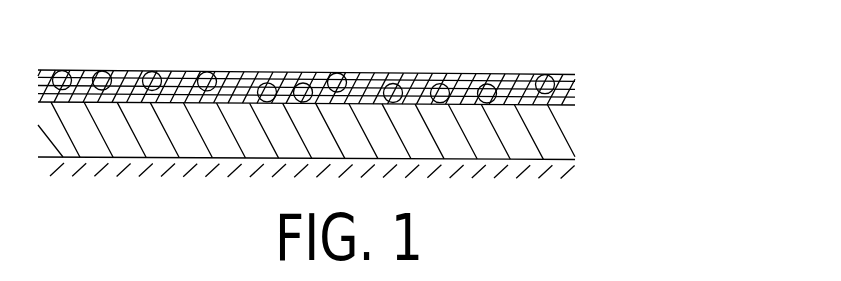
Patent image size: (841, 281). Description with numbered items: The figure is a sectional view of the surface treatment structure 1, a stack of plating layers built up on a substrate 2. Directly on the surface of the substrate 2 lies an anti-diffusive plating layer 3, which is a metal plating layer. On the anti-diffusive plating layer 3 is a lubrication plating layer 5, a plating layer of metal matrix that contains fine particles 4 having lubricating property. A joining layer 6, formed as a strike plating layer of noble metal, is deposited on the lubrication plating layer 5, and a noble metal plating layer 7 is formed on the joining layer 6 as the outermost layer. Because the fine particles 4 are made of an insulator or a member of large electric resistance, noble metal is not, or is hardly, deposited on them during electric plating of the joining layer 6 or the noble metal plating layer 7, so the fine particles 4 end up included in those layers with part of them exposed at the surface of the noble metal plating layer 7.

The surface treatment structure 1 is at (670, 150).
The substrate 2 is at (550, 174).
The anti-diffusive plating layer 3 is at (548, 142).
The fine particles 4 is at (208, 74).
The lubrication plating layer 5 is at (576, 99).
The joining layer 6 is at (576, 88).
The noble metal plating layer 7 is at (576, 74).